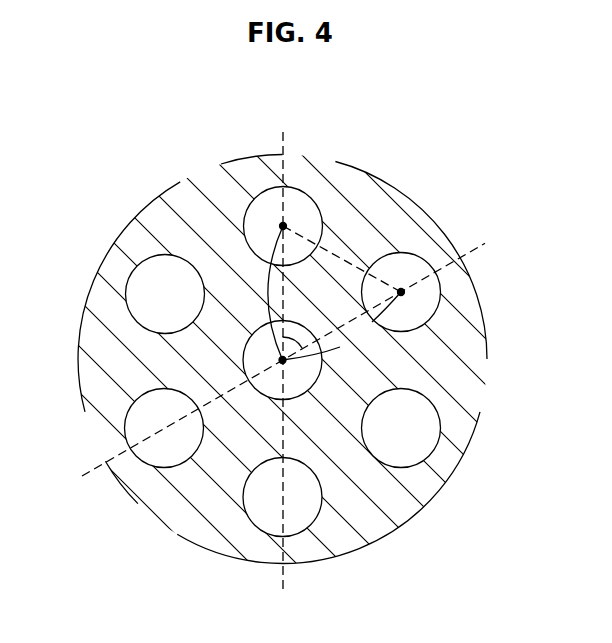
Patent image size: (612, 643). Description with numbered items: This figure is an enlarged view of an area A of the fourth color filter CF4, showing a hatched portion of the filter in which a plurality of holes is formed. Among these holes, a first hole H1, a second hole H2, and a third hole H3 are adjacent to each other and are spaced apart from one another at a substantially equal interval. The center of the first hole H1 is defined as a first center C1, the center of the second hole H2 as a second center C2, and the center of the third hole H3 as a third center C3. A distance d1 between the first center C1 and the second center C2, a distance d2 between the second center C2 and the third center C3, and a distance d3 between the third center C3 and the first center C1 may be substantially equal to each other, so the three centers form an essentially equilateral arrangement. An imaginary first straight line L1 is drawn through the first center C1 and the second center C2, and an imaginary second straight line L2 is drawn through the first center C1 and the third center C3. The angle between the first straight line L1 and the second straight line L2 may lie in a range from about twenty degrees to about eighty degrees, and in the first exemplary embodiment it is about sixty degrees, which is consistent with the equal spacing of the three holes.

The area A is at (145, 170).
The fourth color filter CF4 is at (375, 213).
The first hole H1 is at (303, 375).
The second hole H2 is at (300, 202).
The third hole H3 is at (427, 292).
The first straight line L1 is at (279, 348).
The second straight line L2 is at (295, 352).
The first center C1 is at (268, 356).
The second center C2 is at (269, 216).
The third center C3 is at (407, 307).
The distance between the first center and the second center d1 is at (269, 293).
The distance between the second center and the third center d2 is at (283, 226).
The distance between the third center and the first center d3 is at (342, 326).